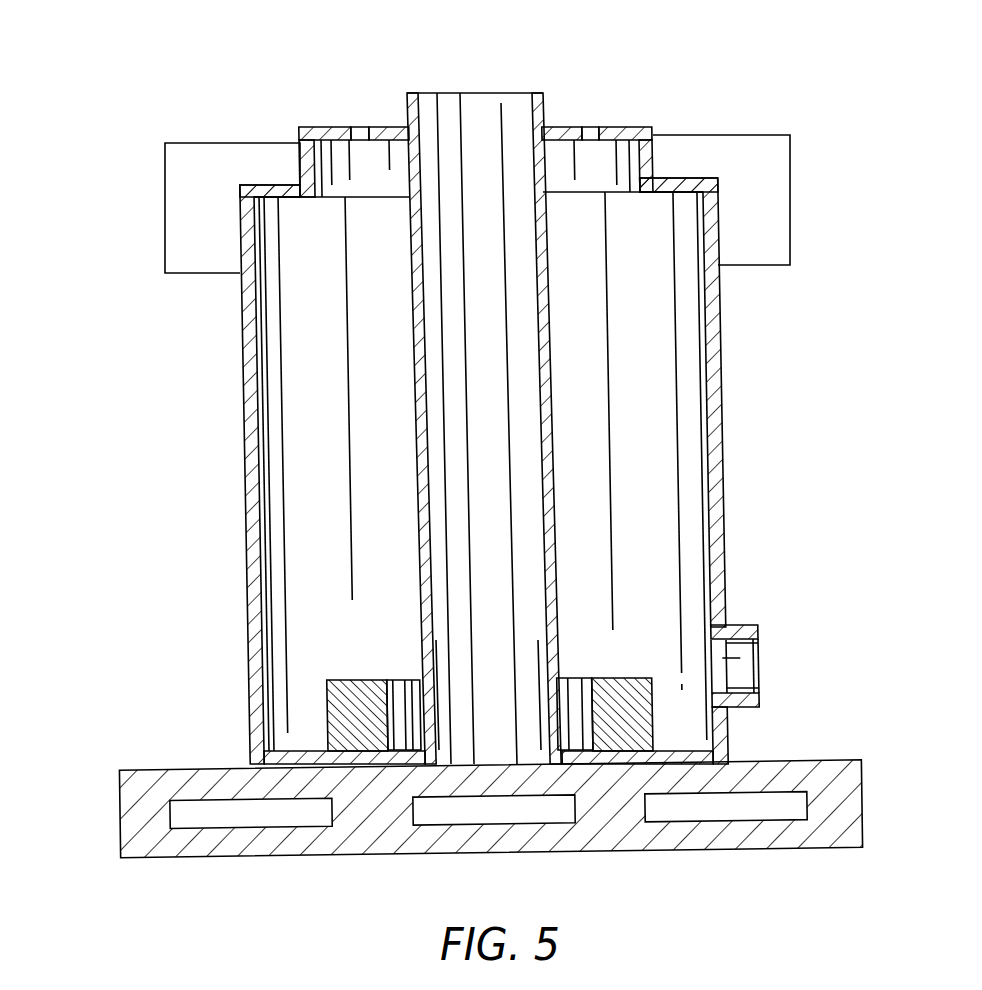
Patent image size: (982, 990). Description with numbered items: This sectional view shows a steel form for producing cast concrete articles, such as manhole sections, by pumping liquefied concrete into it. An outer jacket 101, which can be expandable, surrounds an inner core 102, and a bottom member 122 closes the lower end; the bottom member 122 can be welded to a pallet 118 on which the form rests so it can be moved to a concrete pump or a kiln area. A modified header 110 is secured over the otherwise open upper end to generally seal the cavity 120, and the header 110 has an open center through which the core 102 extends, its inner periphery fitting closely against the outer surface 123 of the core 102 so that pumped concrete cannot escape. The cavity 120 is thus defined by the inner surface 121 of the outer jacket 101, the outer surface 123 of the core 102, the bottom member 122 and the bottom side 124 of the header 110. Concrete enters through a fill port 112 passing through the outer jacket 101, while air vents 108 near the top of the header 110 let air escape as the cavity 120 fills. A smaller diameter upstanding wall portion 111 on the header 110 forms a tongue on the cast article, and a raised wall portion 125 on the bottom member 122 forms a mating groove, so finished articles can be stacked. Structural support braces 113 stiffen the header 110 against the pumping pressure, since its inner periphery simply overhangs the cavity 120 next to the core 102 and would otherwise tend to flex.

The outer jacket 101 is at (723, 432).
The inner core 102 is at (474, 92).
The air vents 108 is at (358, 131).
The modified header 110 is at (683, 177).
The smaller diameter upstanding wall portion 111 is at (298, 168).
The fill port 112 is at (758, 697).
The structural support braces 113 is at (163, 205).
The pallet 118 is at (862, 802).
The cavity 120 is at (657, 358).
The inner surface of the outer jacket 121 is at (725, 497).
The bottom member 122 is at (293, 750).
The outer surface of the core 123 is at (415, 447).
The bottom side of the modified header 124 is at (293, 198).
The raised wall portion 125 is at (653, 700).